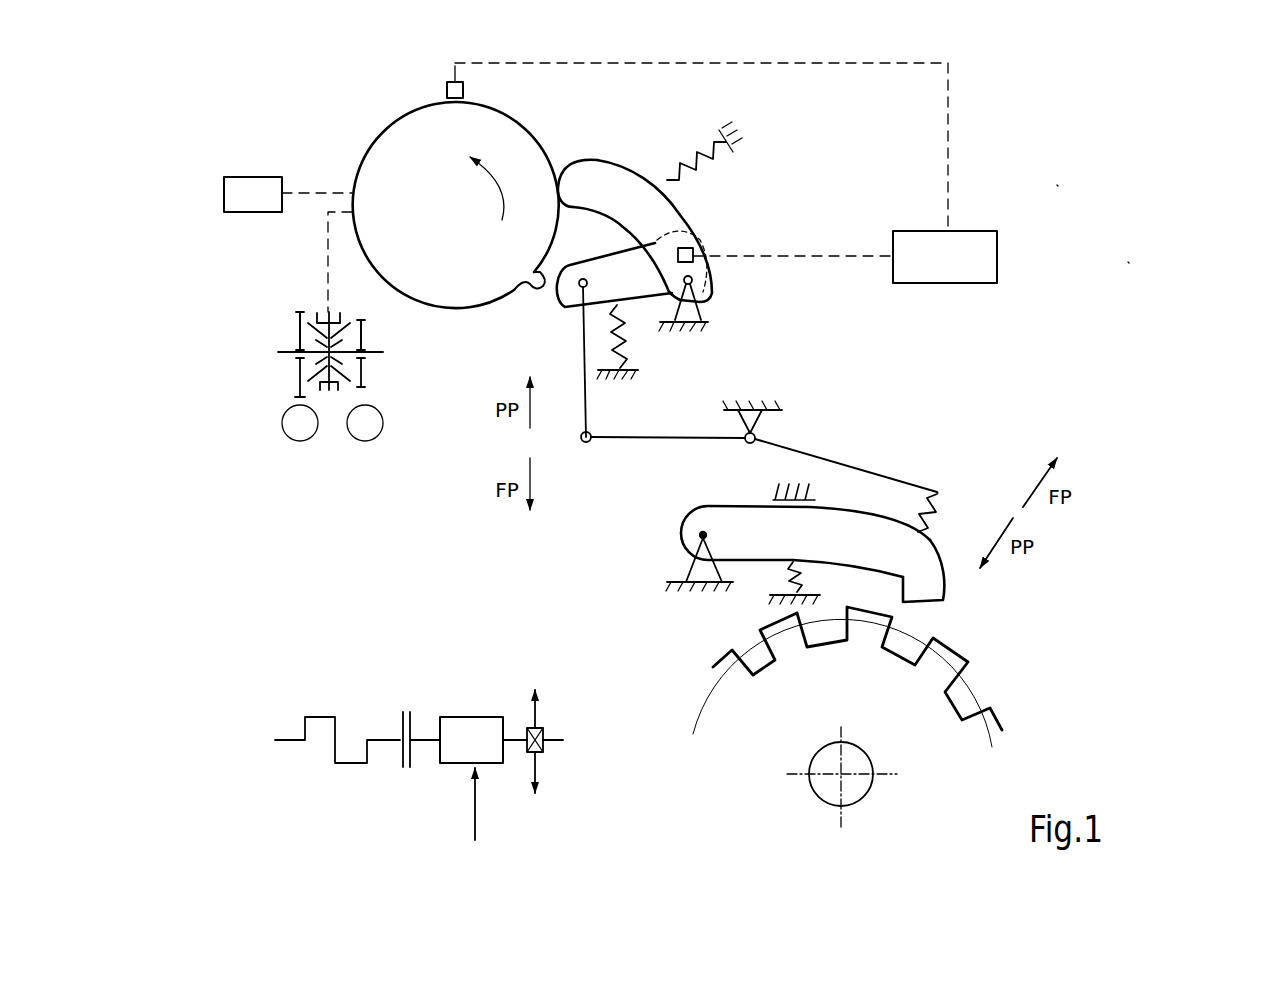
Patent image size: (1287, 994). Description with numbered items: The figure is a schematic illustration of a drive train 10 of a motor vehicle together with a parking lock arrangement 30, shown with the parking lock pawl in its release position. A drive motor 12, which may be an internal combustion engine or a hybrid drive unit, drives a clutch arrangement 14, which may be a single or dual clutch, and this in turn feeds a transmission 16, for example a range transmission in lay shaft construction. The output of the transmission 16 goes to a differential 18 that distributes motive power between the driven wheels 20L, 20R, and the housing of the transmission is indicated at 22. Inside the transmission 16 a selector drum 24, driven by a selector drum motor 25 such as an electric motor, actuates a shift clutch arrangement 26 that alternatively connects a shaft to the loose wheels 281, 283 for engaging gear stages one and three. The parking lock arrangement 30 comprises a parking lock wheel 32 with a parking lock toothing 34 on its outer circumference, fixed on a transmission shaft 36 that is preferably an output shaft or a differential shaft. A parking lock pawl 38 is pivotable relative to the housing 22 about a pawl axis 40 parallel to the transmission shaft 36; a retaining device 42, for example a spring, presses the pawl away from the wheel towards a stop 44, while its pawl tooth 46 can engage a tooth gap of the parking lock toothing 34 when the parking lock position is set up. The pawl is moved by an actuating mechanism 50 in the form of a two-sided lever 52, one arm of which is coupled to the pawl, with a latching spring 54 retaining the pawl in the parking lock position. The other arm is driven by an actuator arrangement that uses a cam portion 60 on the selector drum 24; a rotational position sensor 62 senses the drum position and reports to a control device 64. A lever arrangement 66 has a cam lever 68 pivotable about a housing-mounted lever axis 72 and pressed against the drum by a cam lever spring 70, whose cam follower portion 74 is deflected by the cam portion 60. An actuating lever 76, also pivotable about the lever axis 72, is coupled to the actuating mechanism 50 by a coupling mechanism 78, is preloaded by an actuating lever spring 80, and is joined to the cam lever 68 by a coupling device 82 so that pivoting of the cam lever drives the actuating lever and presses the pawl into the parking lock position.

The drive train 10 is at (1129, 262).
The drive motor 12 is at (315, 713).
The clutch arrangement 14 is at (402, 722).
The transmission 16 is at (490, 809).
The differential 18 is at (548, 738).
The driven wheel 20R is at (537, 710).
The driven wheel 20L is at (538, 767).
The housing 22 is at (477, 717).
The selector drum 24 is at (407, 140).
The selector drum motor 25 is at (250, 183).
The shift clutch arrangement 26 is at (338, 396).
The loose wheel 281 is at (300, 320).
The loose wheel 283 is at (363, 333).
The parking lock arrangement 30 is at (1059, 186).
The parking lock wheel 32 is at (1003, 712).
The parking lock toothing 34 is at (967, 658).
The transmission shaft 36 is at (873, 772).
The parking lock pawl 38 is at (707, 503).
The pawl axis 40 is at (700, 533).
The retaining device 42 is at (790, 562).
The stop 44 is at (797, 500).
The pawl tooth 46 is at (927, 590).
The actuating mechanism 50 is at (934, 446).
The two-sided lever 52 is at (850, 463).
The latching spring 54 is at (942, 513).
The cam portion 60 is at (537, 280).
The rotational position sensor 62 is at (447, 92).
The control device 64 is at (997, 260).
The lever arrangement 66 is at (734, 177).
The cam lever 68 is at (618, 173).
The cam lever spring 70 is at (688, 158).
The lever axis 72 is at (697, 290).
The cam follower portion 74 is at (573, 183).
The actuating lever 76 is at (563, 290).
The coupling mechanism 78 is at (583, 385).
The actuating lever spring 80 is at (630, 348).
The coupling device 82 is at (688, 248).